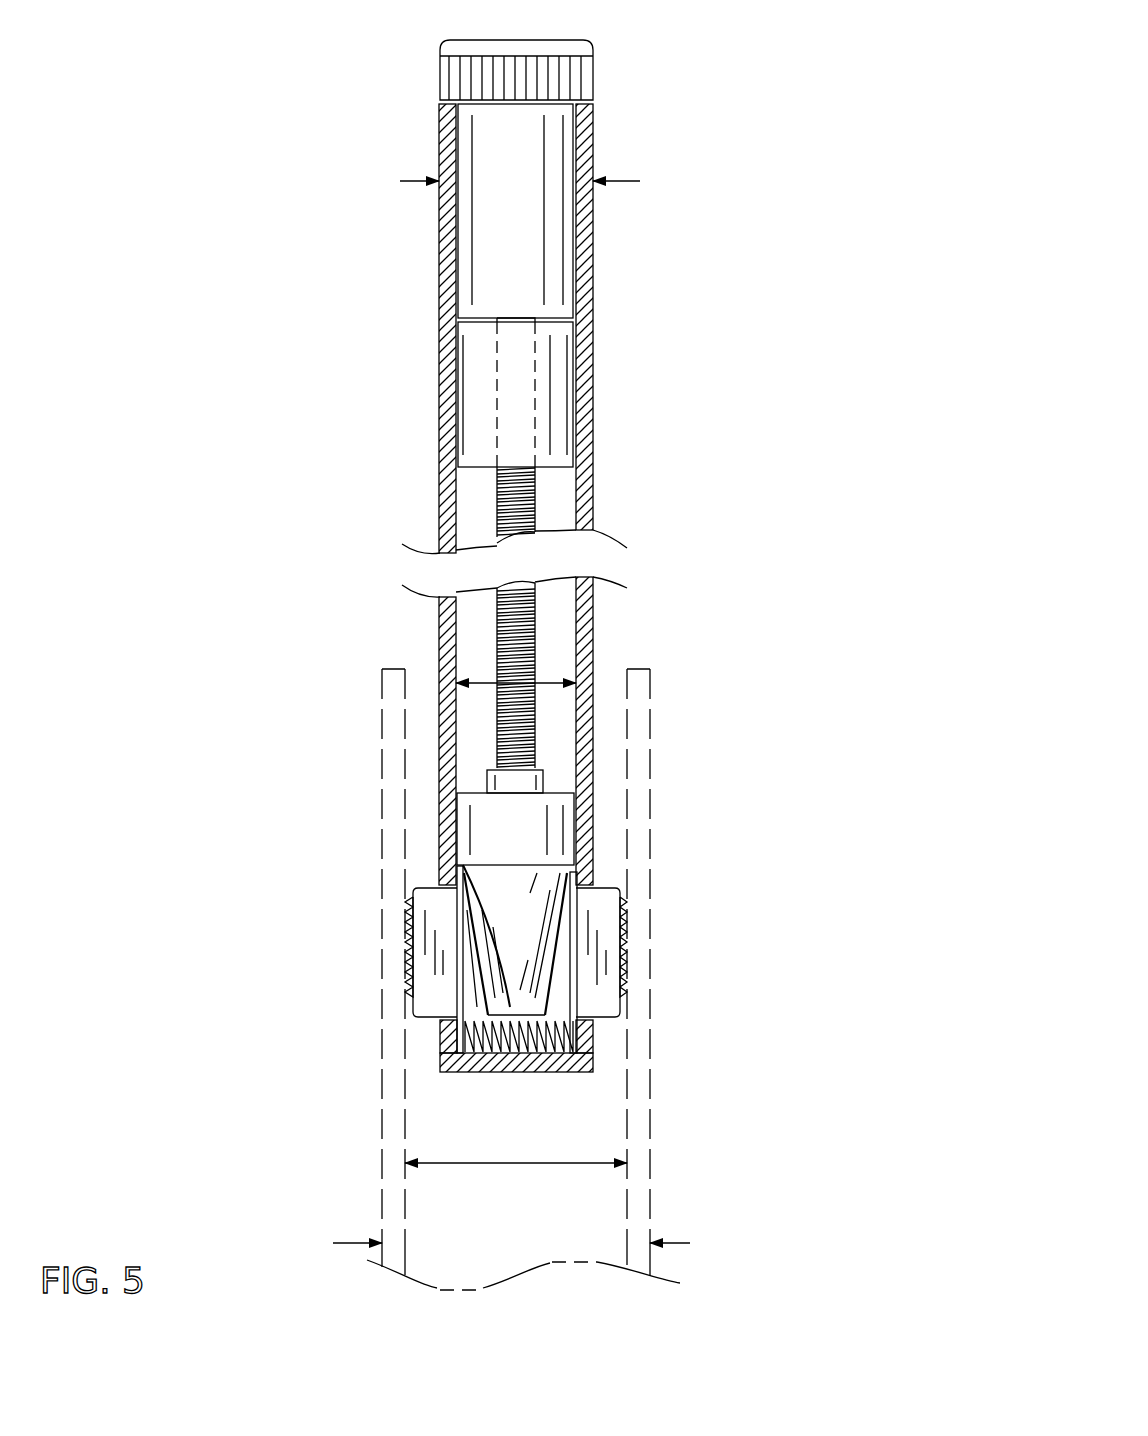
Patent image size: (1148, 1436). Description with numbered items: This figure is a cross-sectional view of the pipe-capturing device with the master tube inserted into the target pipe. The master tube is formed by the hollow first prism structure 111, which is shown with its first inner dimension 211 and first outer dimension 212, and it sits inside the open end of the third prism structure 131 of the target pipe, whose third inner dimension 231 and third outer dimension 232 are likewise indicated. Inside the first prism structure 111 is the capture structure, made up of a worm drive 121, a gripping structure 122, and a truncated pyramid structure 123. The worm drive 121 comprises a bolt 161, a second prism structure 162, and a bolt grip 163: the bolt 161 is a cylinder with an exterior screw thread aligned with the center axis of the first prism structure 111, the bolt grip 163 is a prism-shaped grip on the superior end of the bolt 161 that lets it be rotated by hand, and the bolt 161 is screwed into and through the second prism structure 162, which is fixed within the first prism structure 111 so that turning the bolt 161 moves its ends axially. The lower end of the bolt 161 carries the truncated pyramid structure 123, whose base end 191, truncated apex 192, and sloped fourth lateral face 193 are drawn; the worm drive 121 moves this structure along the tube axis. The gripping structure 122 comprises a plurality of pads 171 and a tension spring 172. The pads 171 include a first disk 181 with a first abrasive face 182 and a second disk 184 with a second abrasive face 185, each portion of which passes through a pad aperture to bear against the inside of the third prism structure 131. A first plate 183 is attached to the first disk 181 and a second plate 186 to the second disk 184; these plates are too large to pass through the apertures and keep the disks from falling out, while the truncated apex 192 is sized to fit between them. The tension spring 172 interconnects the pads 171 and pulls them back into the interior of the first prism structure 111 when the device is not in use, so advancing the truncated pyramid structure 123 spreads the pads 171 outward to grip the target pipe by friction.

The first prism structure 111 is at (438, 323).
The worm drive 121 is at (531, 398).
The gripping structure 122 is at (582, 979).
The truncated pyramid structure 123 is at (497, 904).
The third prism structure 131 is at (637, 1203).
The bolt 161 is at (473, 517).
The second prism structure 162 is at (470, 400).
The bolt grip 163 is at (512, 130).
The plurality of pads 171 is at (539, 982).
The tension spring 172 is at (503, 1055).
The first disk 181 is at (433, 980).
The first abrasive face 182 is at (403, 945).
The first plate 183 is at (460, 1035).
The second disk 184 is at (602, 1000).
The second abrasive face 185 is at (625, 938).
The second plate 186 is at (762, 892).
The base end 191 is at (629, 773).
The truncated apex 192 is at (465, 877).
The fourth lateral face 193 is at (533, 893).
The first inner dimension 211 is at (492, 680).
The first outer dimension 212 is at (558, 181).
The third inner dimension 231 is at (515, 1163).
The third outer dimension 232 is at (551, 1243).